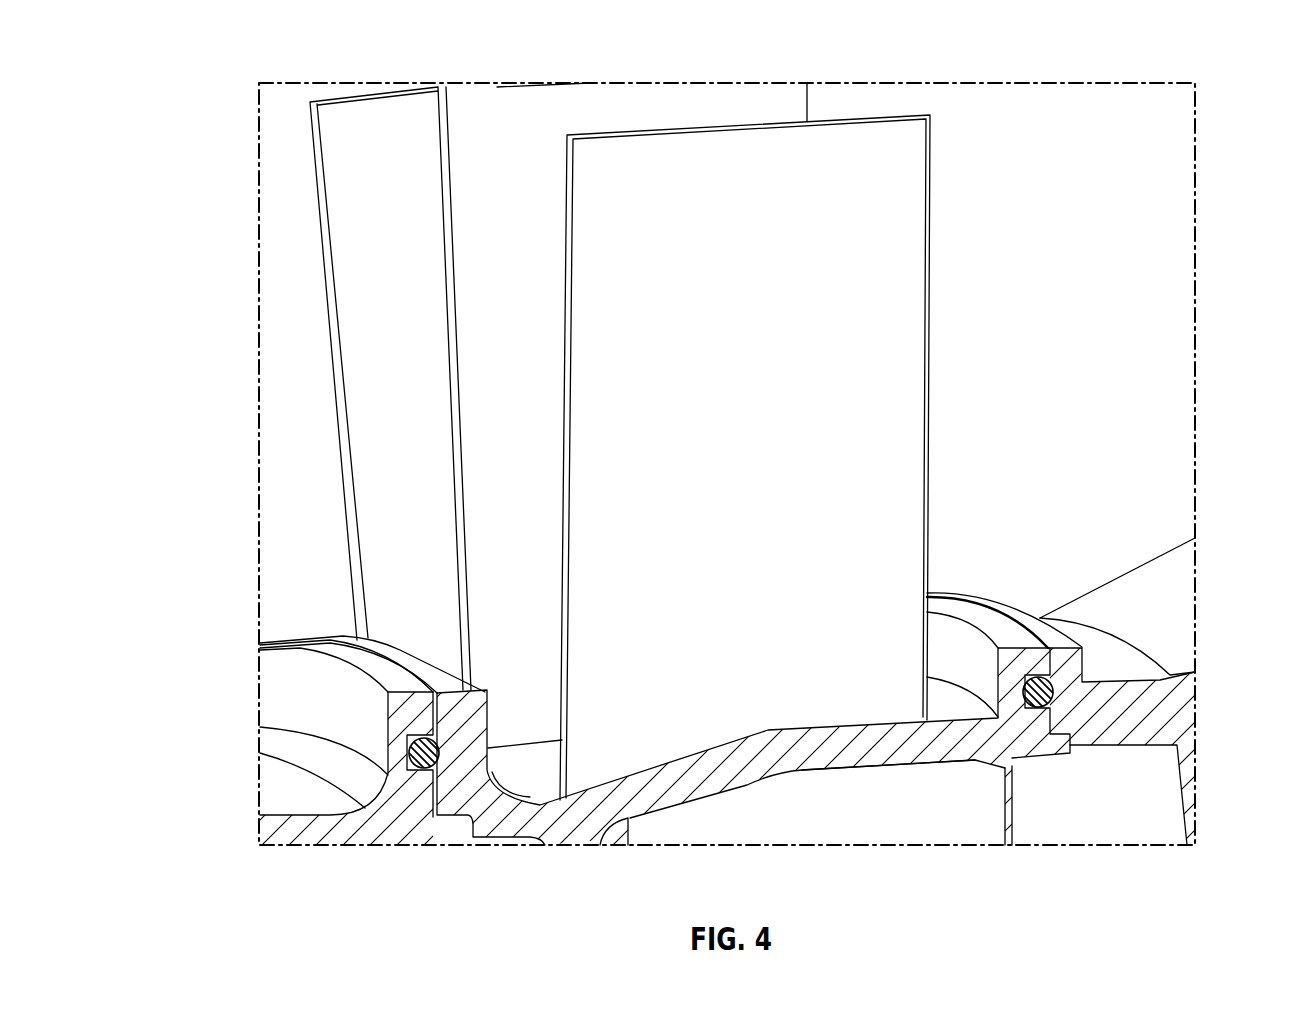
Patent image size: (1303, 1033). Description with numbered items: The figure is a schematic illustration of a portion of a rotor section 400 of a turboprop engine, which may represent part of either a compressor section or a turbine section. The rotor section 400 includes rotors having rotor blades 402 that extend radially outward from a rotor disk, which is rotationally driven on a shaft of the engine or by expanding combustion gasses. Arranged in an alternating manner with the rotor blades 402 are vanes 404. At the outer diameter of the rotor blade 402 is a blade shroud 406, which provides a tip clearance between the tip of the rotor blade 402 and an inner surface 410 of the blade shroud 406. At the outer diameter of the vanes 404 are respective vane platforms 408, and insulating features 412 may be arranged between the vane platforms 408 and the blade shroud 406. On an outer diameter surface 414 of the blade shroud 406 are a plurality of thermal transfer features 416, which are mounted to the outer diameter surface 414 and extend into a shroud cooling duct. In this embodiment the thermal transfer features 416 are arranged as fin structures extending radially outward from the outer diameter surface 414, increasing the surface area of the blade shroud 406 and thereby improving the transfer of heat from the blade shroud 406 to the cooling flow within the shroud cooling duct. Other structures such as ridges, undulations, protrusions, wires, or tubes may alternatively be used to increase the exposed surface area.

The rotor section 400 is at (208, 58).
The rotor blades 402 is at (912, 800).
The vanes 404 is at (1097, 808).
The blade shroud 406 is at (707, 777).
The vane platforms 408 is at (1190, 722).
The inner surface 410 is at (836, 776).
The insulating features 412 is at (420, 768).
The outer diameter surface 414 is at (944, 698).
The thermal transfer features 416 is at (608, 95).